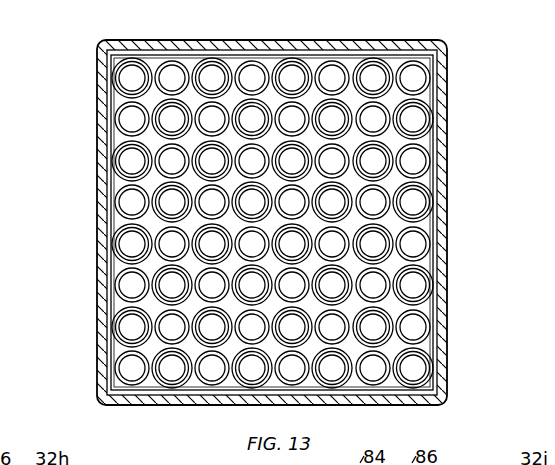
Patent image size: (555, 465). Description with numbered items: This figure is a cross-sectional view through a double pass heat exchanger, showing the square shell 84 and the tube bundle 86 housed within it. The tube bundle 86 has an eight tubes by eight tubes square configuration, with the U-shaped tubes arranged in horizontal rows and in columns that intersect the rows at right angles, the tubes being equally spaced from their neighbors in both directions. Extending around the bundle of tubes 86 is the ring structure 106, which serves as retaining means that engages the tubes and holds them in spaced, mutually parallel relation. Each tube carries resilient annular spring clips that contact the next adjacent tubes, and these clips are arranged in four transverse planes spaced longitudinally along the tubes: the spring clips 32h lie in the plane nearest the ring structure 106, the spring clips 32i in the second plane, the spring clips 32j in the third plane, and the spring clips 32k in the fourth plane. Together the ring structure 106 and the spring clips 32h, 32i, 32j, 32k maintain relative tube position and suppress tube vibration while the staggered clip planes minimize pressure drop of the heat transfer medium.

The shell 84 is at (449, 50).
The tube bundle 86 is at (155, 57).
The ring structure 106 is at (405, 54).
The spring clips 32h is at (125, 62).
The spring clips 32i is at (160, 62).
The spring clips 32j is at (312, 62).
The spring clips 32k is at (208, 62).